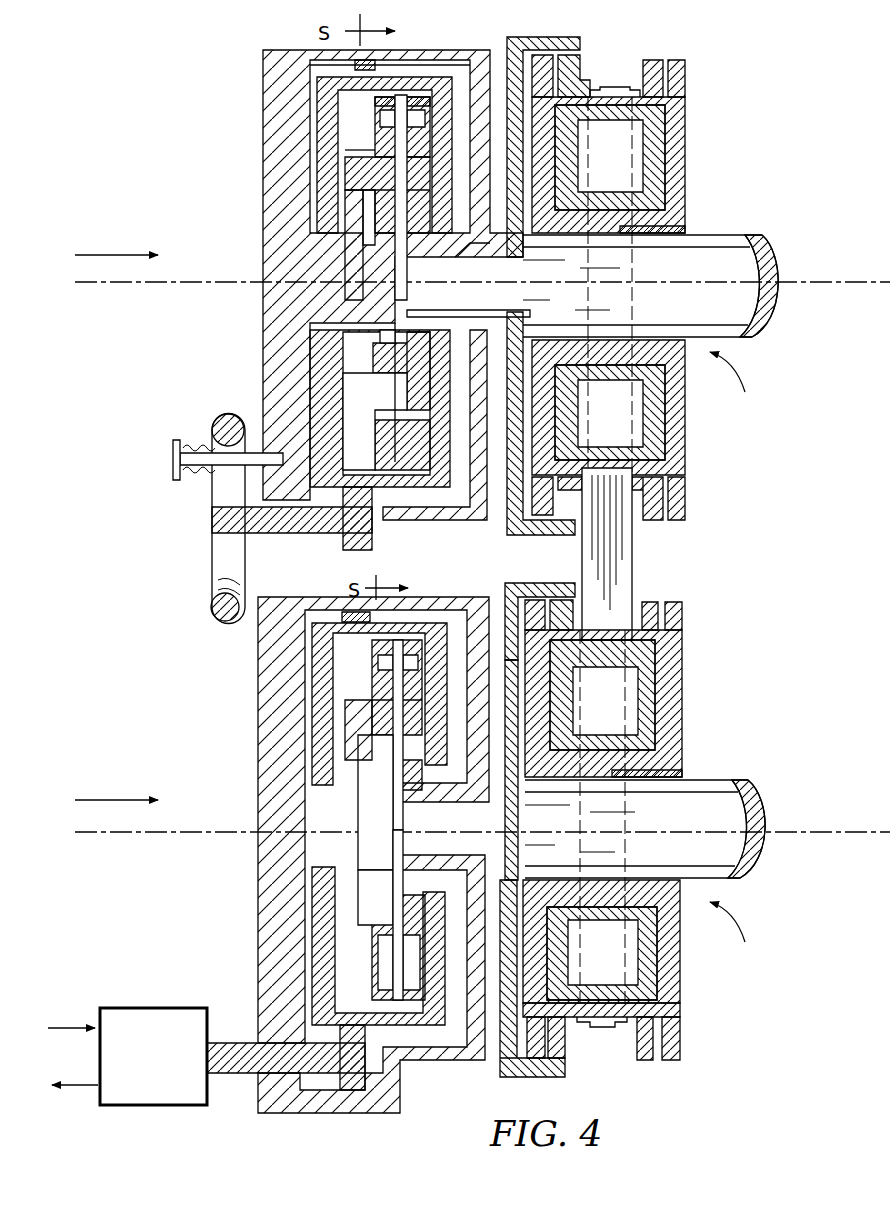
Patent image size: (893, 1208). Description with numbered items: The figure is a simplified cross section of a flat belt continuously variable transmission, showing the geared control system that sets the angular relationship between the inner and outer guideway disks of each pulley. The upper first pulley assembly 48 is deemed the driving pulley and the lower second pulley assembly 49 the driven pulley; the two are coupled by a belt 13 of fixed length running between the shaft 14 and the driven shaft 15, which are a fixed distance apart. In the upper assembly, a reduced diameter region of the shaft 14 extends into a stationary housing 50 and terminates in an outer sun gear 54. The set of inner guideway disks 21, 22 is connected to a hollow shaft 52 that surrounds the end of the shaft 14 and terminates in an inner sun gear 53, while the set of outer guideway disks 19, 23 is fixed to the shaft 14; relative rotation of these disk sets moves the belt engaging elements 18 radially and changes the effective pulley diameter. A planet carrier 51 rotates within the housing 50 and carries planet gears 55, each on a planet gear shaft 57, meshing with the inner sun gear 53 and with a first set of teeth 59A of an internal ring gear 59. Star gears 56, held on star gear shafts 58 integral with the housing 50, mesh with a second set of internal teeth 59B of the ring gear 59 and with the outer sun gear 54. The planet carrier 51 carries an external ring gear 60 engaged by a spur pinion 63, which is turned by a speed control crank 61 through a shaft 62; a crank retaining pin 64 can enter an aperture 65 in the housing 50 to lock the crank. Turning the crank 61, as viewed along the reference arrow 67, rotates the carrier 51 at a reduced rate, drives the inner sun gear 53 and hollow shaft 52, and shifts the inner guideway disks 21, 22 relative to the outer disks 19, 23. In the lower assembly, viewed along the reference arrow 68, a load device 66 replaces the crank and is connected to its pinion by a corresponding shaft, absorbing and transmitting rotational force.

The belt 13 is at (628, 560).
The shaft 14 is at (715, 240).
The driven shaft 15 is at (715, 780).
The belt engaging elements 18 is at (612, 90).
The outer guideway disk 19 is at (678, 140).
The inner guideway disk 21 is at (655, 62).
The inner guideway disk 22 is at (575, 75).
The outer guideway disk 23 is at (540, 65).
The first pulley assembly 48 is at (738, 377).
The second pulley assembly 49 is at (738, 927).
The stationary housing 50 is at (285, 52).
The planet carrier 51 is at (372, 103).
The hollow shaft 52 is at (462, 250).
The inner sun gear 53 is at (420, 262).
The outer sun gear 54 is at (372, 292).
The planet gears 55 is at (425, 110).
The star gears 56 is at (372, 148).
The planet gear shaft 57 is at (410, 168).
The star gear shafts 58 is at (365, 172).
The internal ring gear 59 is at (330, 96).
The first set of teeth 59A is at (415, 115).
The second set of internal teeth 59B is at (385, 95).
The external ring gear 60 is at (358, 62).
The speed control crank 61 is at (225, 615).
The shaft 62 is at (300, 528).
The spur pinion 63 is at (375, 545).
The crank retaining pin 64 is at (212, 418).
The aperture 65 is at (290, 468).
The load device 66 is at (168, 1008).
The reference arrow 67 is at (116, 241).
The reference arrow 68 is at (116, 783).